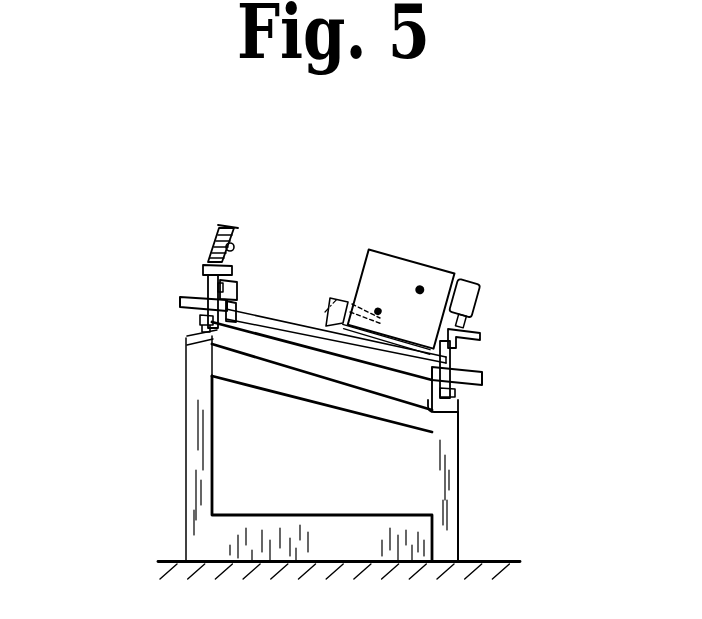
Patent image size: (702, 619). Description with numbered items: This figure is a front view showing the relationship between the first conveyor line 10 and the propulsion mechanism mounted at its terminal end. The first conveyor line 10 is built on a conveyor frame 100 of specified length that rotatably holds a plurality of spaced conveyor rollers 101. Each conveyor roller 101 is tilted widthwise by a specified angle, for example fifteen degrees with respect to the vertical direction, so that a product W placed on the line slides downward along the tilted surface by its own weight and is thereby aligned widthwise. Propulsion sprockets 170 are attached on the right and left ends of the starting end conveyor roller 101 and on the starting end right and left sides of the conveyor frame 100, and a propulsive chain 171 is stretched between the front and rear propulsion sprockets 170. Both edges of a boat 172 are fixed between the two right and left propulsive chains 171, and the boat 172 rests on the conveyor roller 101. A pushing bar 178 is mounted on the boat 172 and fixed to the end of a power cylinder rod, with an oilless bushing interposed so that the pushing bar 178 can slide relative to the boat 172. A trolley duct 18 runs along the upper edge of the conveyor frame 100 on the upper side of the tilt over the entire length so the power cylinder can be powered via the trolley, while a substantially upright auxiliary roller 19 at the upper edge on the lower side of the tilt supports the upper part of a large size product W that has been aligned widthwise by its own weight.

The first conveyor line 10 is at (472, 491).
The trolley duct 18 is at (232, 229).
The auxiliary roller 19 is at (482, 291).
The conveyor frame 100 is at (190, 432).
The conveyor roller 101 is at (281, 326).
The propulsion sprocket 170 is at (192, 330).
The propulsive chain 171 is at (187, 340).
The boat 172 is at (291, 310).
The pushing bar 178 is at (410, 265).
The product W is at (342, 296).